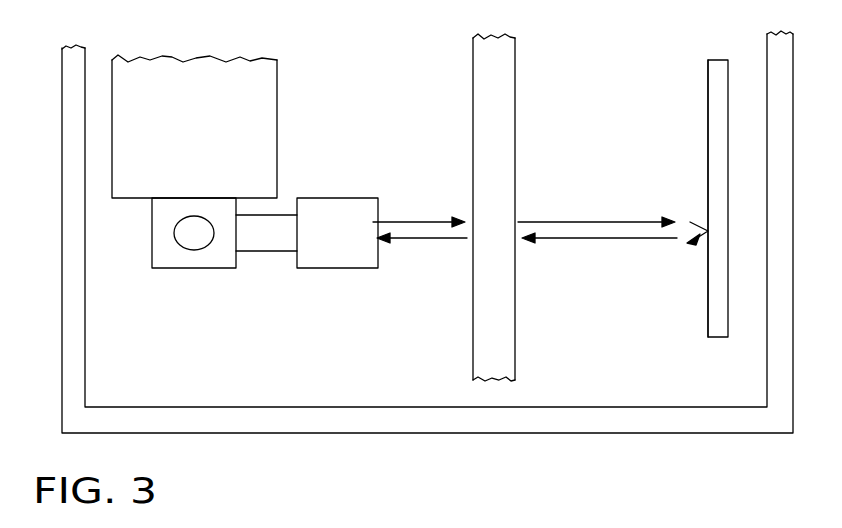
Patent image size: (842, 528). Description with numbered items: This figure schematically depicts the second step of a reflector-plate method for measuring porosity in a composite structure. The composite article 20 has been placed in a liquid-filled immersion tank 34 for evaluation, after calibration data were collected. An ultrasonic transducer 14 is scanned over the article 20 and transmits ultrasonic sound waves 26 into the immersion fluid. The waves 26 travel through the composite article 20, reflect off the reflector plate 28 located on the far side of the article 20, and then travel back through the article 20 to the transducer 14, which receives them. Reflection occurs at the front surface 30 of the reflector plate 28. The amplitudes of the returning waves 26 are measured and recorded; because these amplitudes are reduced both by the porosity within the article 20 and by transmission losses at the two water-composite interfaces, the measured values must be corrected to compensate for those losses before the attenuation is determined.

The ultrasonic transducer 14 is at (349, 260).
The composite article 20 is at (513, 115).
The ultrasonic sound waves 26 is at (442, 220).
The reflector plate 28 is at (722, 152).
The front surface 30 is at (708, 97).
The immersion tank 34 is at (362, 432).